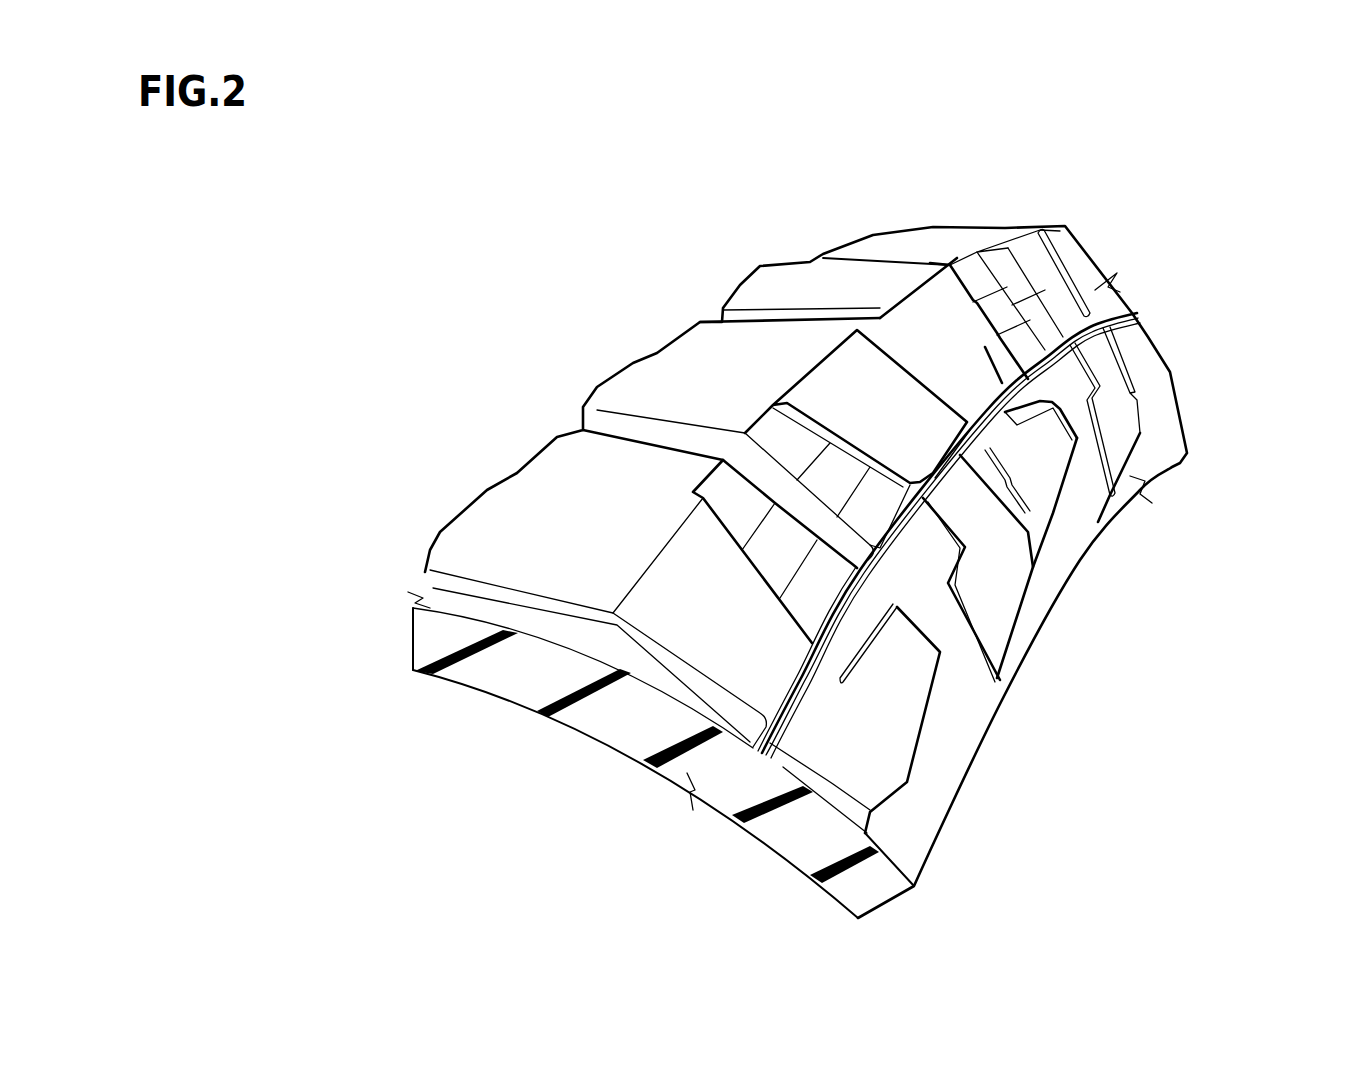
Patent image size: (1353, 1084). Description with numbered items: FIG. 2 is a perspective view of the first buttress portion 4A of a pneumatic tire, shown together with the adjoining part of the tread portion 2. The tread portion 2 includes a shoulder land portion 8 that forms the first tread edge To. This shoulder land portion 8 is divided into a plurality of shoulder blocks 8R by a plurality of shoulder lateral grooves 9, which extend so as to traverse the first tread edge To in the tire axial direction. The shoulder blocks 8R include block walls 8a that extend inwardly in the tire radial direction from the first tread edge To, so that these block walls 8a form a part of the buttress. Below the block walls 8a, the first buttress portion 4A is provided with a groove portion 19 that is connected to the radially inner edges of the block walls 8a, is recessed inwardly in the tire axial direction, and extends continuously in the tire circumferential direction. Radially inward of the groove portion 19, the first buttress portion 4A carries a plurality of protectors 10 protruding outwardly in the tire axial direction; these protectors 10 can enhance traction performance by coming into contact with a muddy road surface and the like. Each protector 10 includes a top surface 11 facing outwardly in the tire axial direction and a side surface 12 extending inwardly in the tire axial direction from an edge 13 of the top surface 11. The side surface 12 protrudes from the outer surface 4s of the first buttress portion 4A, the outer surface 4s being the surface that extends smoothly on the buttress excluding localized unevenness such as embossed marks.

The tread portion 2 is at (825, 215).
The block walls 8a is at (931, 332).
The first buttress portion 4A is at (1112, 218).
The first tread edge To is at (825, 360).
The shoulder lateral grooves 9 is at (750, 315).
The shoulder blocks 8R is at (670, 372).
The shoulder land portion 8 is at (433, 505).
The groove portion 19 is at (1127, 313).
The side surface 12 is at (1033, 407).
The edge 13 is at (1093, 402).
The protectors 10 is at (1088, 455).
The top surface 11 is at (1083, 490).
The outer surface 4s is at (947, 755).